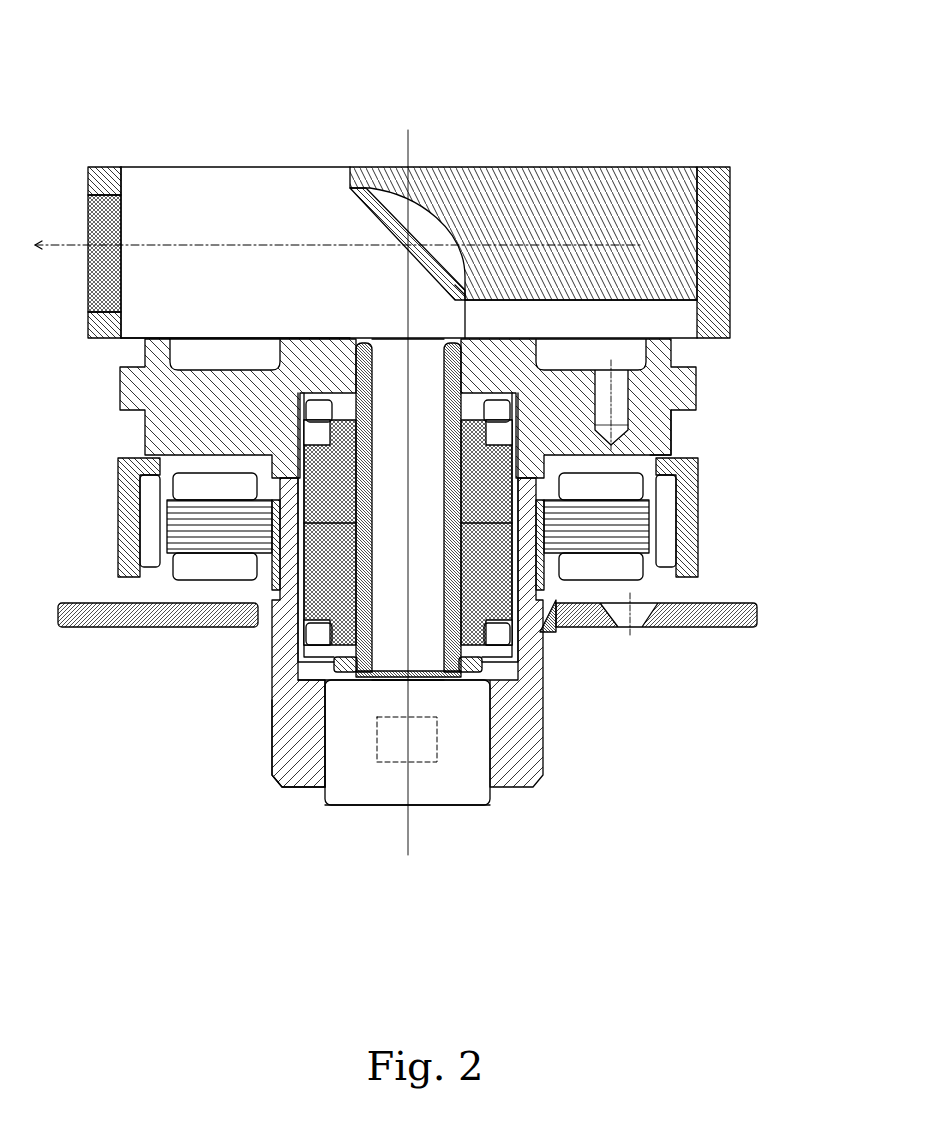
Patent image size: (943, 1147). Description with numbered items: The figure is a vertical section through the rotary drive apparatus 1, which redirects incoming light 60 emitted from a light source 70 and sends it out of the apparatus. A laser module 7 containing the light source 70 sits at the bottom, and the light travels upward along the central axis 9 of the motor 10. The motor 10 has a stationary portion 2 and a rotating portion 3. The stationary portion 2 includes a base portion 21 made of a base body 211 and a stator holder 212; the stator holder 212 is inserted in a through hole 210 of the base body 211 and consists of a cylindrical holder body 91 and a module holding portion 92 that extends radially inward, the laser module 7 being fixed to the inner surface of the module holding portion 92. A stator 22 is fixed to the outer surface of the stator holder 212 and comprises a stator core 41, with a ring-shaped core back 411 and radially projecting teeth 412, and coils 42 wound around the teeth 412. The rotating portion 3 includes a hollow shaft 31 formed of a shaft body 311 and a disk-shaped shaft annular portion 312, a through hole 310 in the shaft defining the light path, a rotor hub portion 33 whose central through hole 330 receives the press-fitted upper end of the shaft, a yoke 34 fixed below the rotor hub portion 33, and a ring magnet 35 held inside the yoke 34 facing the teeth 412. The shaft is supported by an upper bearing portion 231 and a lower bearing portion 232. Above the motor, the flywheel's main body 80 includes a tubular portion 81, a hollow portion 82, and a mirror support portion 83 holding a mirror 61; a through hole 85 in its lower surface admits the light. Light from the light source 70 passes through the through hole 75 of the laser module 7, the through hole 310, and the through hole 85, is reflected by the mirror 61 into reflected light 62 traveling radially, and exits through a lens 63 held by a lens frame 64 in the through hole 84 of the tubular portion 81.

The rotary drive apparatus 1 is at (440, 87).
The stationary portion 2 is at (415, 719).
The rotating portion 3 is at (407, 403).
The laser module 7 is at (437, 850).
The central axis 9 is at (405, 142).
The motor 10 is at (720, 550).
The base portion 21 is at (313, 661).
The stator 22 is at (346, 627).
The hollow shaft 31 is at (394, 704).
The rotor hub portion 33 is at (678, 440).
The yoke 34 is at (118, 468).
The magnet 35 is at (150, 535).
The stator core 41 is at (180, 610).
The coils 42 is at (170, 540).
The incoming light 60 is at (500, 745).
The mirror 61 is at (426, 373).
The reflected light 62 is at (65, 245).
The lens 63 is at (118, 213).
The lens frame 64 is at (98, 183).
The light source 70 is at (437, 765).
The through hole 75 is at (437, 683).
The main body 80 is at (444, 231).
The tubular portion 81 is at (713, 203).
The hollow portion 82 is at (225, 212).
The mirror support portion 83 is at (647, 203).
The through hole 84 is at (130, 286).
The through hole 85 is at (388, 333).
The holder body 91 is at (355, 655).
The module holding portion 92 is at (368, 640).
The through hole 210 is at (548, 628).
The base body 211 is at (300, 640).
The stator holder 212 is at (335, 662).
The upper bearing portion 231 is at (470, 300).
The lower bearing portion 232 is at (485, 672).
The through hole 310 is at (392, 620).
The shaft body 311 is at (330, 790).
The shaft annular portion 312 is at (290, 730).
The through hole 330 is at (460, 285).
The core back 411 is at (262, 525).
The teeth 412 is at (203, 487).